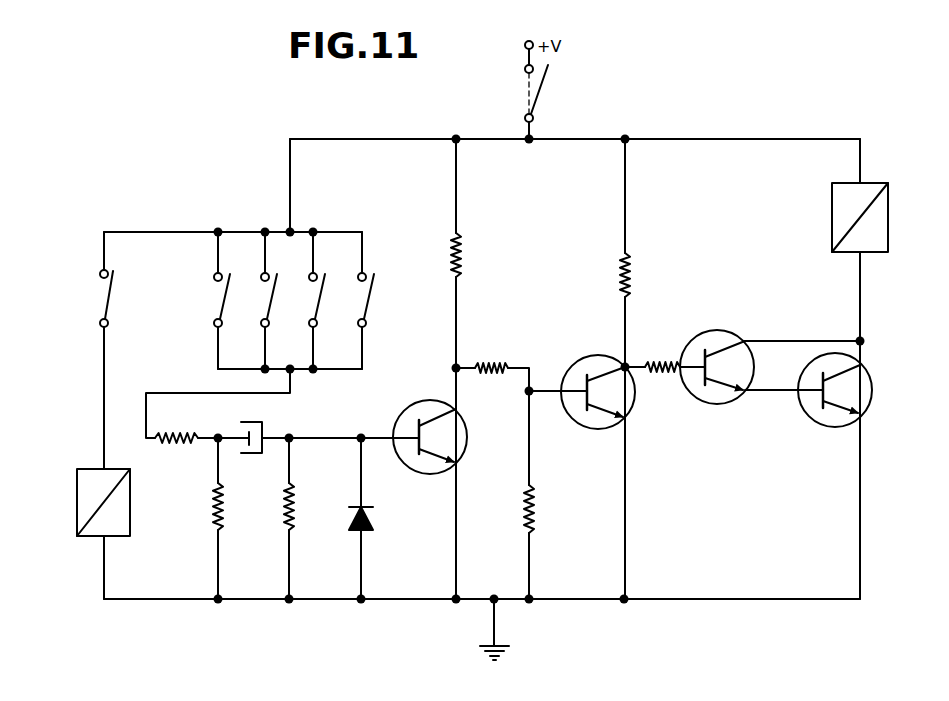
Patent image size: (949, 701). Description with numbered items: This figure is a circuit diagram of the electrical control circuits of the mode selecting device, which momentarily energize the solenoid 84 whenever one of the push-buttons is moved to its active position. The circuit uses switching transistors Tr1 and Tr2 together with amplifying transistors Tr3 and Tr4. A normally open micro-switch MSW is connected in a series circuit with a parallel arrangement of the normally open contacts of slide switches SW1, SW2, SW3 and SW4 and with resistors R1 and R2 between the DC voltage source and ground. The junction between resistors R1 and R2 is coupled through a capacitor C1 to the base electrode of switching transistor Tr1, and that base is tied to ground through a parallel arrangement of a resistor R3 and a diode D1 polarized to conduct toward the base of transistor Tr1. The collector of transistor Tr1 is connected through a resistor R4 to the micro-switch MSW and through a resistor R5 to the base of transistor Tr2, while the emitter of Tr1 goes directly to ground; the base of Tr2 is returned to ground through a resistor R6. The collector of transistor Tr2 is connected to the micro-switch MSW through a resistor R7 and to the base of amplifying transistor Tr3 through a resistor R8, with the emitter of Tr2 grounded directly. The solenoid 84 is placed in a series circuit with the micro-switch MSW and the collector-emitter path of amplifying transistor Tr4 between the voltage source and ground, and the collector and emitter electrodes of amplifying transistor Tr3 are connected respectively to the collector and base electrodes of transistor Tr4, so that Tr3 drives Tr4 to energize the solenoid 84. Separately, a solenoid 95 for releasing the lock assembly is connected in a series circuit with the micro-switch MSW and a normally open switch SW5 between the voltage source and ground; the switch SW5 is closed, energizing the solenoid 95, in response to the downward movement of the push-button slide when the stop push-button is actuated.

The solenoid 84 is at (888, 205).
The solenoid 95 is at (130, 500).
The micro-switch MSW is at (564, 90).
The slide switch SW1 is at (226, 296).
The slide switch SW2 is at (273, 296).
The slide switch SW3 is at (321, 296).
The slide switch SW4 is at (370, 296).
The normally open switch SW5 is at (106, 297).
The resistor R1 is at (173, 444).
The resistor R2 is at (223, 496).
The resistor R3 is at (294, 496).
The resistor R4 is at (461, 246).
The resistor R5 is at (492, 362).
The resistor R6 is at (534, 498).
The resistor R7 is at (630, 265).
The resistor R8 is at (655, 362).
The capacitor C1 is at (251, 455).
The diode D1 is at (373, 515).
The switching transistor Tr1 is at (425, 400).
The switching transistor Tr2 is at (598, 355).
The amplifying transistor Tr3 is at (718, 330).
The amplifying transistor Tr4 is at (872, 378).